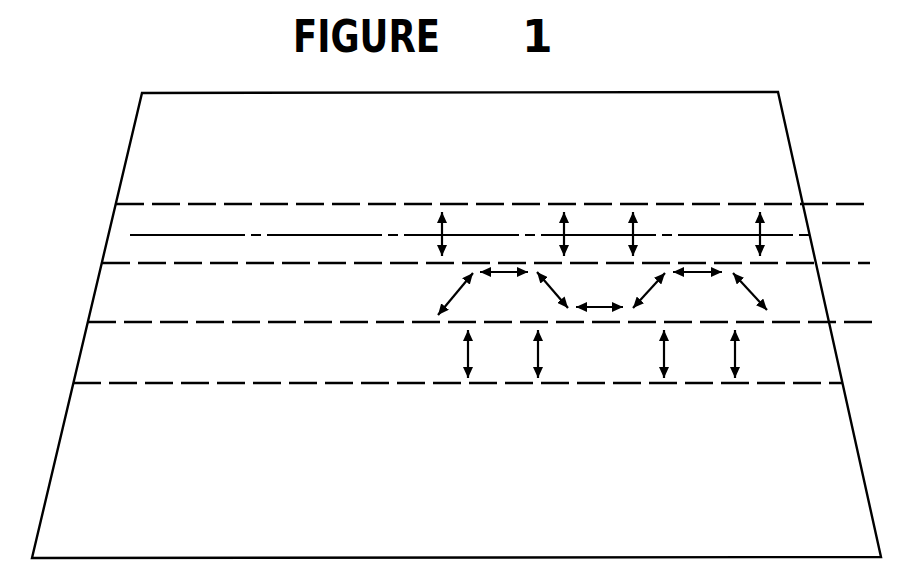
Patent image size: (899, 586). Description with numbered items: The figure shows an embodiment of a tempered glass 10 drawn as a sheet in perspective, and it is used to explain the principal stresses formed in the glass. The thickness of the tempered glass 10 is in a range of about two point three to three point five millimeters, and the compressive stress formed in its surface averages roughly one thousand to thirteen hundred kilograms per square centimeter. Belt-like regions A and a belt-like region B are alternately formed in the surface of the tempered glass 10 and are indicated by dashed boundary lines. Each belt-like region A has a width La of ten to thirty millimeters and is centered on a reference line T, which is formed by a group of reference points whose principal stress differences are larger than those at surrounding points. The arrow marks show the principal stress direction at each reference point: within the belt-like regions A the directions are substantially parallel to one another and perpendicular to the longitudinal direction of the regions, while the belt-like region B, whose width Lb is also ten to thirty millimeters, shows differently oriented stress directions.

The tempered glass 10 is at (753, 165).
The reference line T is at (129, 237).
The belt-like regions A is at (130, 253).
The belt-like region B is at (143, 305).
The width of belt-like region A La is at (857, 204).
The width of belt-like region B Lb is at (857, 263).